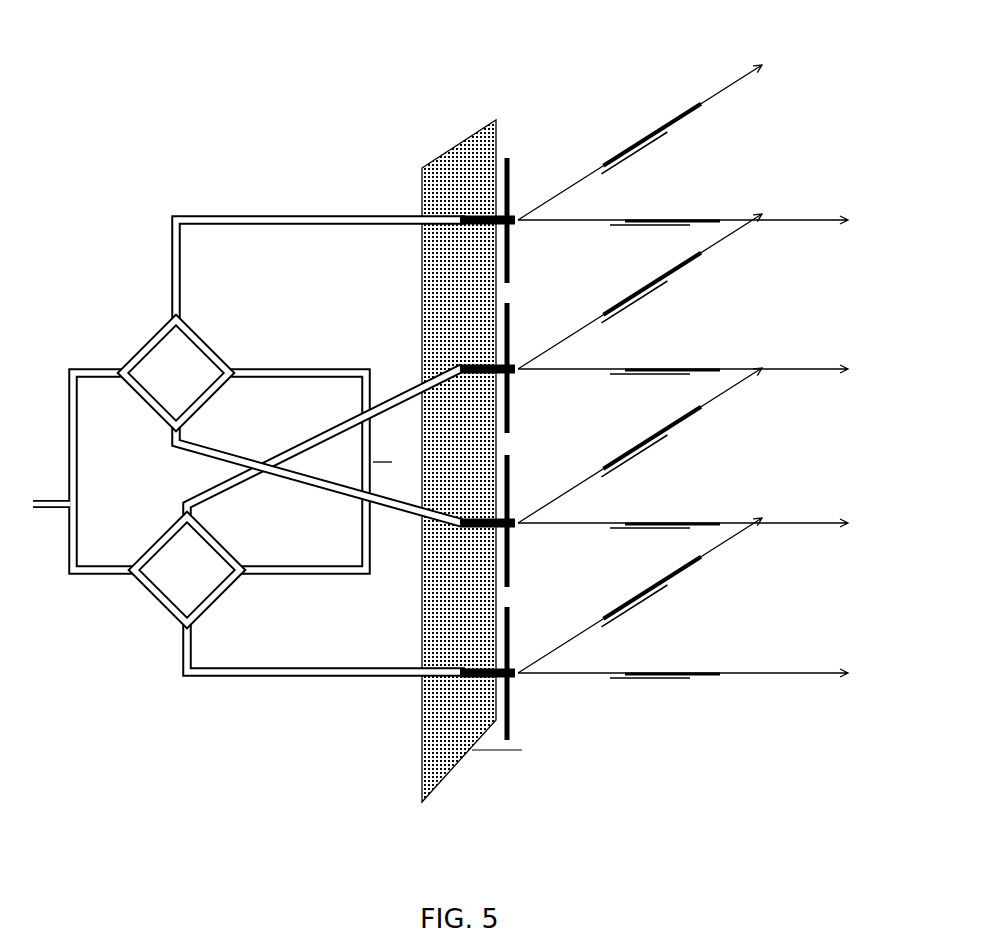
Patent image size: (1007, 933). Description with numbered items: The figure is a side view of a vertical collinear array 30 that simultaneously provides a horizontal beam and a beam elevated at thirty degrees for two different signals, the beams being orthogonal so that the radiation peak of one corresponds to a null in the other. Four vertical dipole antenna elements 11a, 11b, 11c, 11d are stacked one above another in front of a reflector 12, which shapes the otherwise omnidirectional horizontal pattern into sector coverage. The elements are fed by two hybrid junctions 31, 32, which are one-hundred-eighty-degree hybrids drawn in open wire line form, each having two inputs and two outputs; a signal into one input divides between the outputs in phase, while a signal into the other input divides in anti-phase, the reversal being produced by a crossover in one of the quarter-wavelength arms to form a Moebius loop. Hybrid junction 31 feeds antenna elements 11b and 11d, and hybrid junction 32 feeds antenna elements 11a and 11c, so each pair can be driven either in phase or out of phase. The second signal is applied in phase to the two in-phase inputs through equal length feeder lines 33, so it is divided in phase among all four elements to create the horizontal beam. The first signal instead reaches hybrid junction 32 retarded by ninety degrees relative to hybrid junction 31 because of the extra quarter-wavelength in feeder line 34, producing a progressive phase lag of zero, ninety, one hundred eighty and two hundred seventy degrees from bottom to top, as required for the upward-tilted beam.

The vertical collinear array 30 is at (448, 416).
The hybrid junction 31 is at (293, 520).
The hybrid junction 32 is at (289, 371).
The feeder lines 33 is at (293, 367).
The feeder line 34 is at (68, 477).
The dipole antenna element 11a is at (510, 263).
The dipole antenna element 11b is at (514, 420).
The dipole antenna element 11c is at (512, 573).
The dipole antenna element 11d is at (512, 722).
The reflector 12 is at (462, 765).